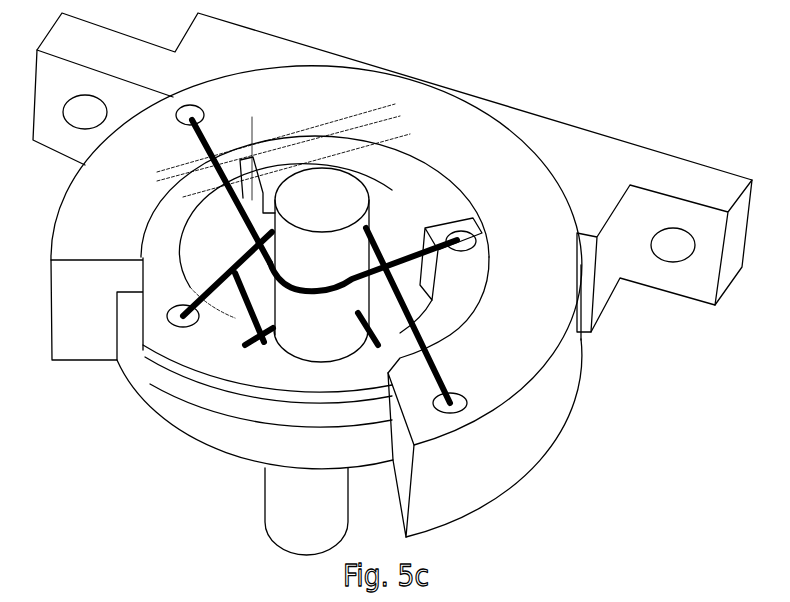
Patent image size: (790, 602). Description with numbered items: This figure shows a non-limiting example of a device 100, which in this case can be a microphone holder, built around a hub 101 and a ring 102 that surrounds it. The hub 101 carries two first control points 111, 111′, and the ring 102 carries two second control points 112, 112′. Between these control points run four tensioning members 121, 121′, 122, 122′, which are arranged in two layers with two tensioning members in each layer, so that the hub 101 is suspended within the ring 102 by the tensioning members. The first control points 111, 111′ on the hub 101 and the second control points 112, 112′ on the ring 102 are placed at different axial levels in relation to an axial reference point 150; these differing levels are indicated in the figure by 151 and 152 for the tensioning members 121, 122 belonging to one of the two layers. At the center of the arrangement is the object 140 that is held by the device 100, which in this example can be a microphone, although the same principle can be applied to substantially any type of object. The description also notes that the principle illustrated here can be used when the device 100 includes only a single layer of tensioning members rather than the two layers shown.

The device 100 is at (648, 73).
The hub 101 is at (282, 368).
The ring 102 is at (520, 345).
The first control point 111 is at (483, 233).
The first control point 111′ is at (153, 325).
The second control point 112 is at (208, 113).
The second control point 112′ is at (468, 404).
The tensioning member 121 is at (470, 302).
The tensioning member 121′ is at (435, 335).
The tensioning member 122 is at (220, 187).
The tensioning member 122′ is at (200, 272).
The object 140 is at (317, 361).
The axial reference point 150 is at (410, 134).
The axial level 151 is at (400, 116).
The axial level 152 is at (395, 104).